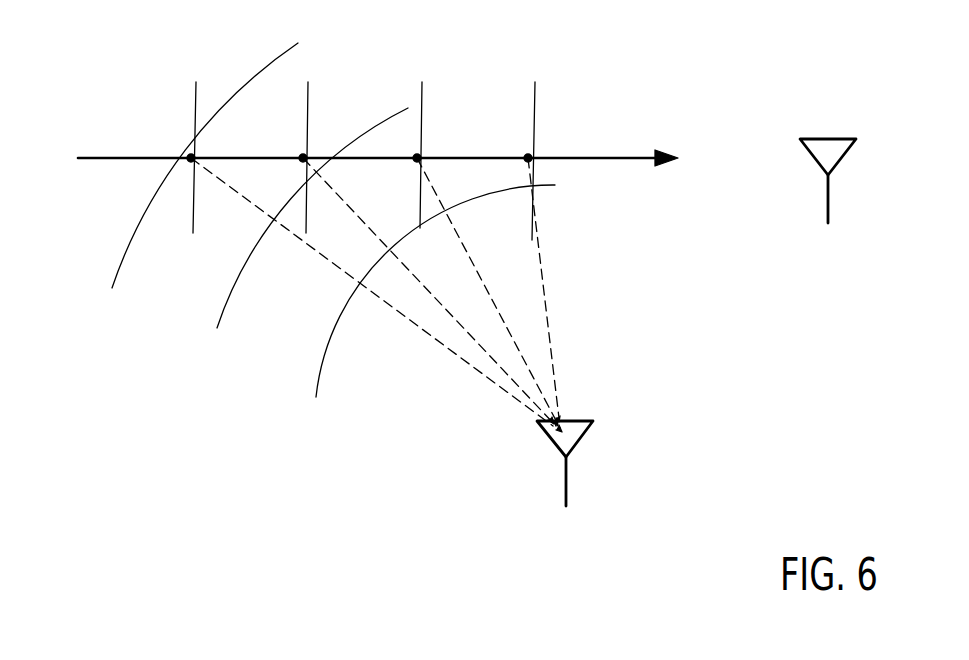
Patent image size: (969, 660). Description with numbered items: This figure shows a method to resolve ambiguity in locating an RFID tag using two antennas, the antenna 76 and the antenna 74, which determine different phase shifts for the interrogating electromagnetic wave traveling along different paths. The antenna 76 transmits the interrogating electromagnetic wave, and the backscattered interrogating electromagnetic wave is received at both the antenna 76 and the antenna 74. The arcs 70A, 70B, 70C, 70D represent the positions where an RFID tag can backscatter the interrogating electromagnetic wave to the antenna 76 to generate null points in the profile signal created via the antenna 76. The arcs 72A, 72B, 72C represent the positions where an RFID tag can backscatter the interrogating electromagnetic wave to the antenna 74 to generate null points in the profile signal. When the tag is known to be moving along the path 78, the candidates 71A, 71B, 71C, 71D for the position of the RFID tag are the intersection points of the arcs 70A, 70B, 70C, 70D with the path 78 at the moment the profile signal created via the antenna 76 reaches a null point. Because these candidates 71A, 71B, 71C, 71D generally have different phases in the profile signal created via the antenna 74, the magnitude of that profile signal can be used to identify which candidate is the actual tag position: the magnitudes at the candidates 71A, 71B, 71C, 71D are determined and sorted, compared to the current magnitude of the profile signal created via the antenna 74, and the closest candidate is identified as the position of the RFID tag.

The arc 70A is at (195, 108).
The arc 70B is at (307, 130).
The arc 70C is at (421, 95).
The arc 70D is at (534, 128).
The candidate 71A is at (193, 163).
The candidate 71B is at (300, 153).
The candidate 71C is at (417, 163).
The candidate 71D is at (533, 157).
The arc 72A is at (122, 262).
The arc 72B is at (232, 298).
The arc 72C is at (325, 363).
The antenna 74 is at (552, 442).
The antenna 76 is at (812, 158).
The path 78 is at (632, 158).